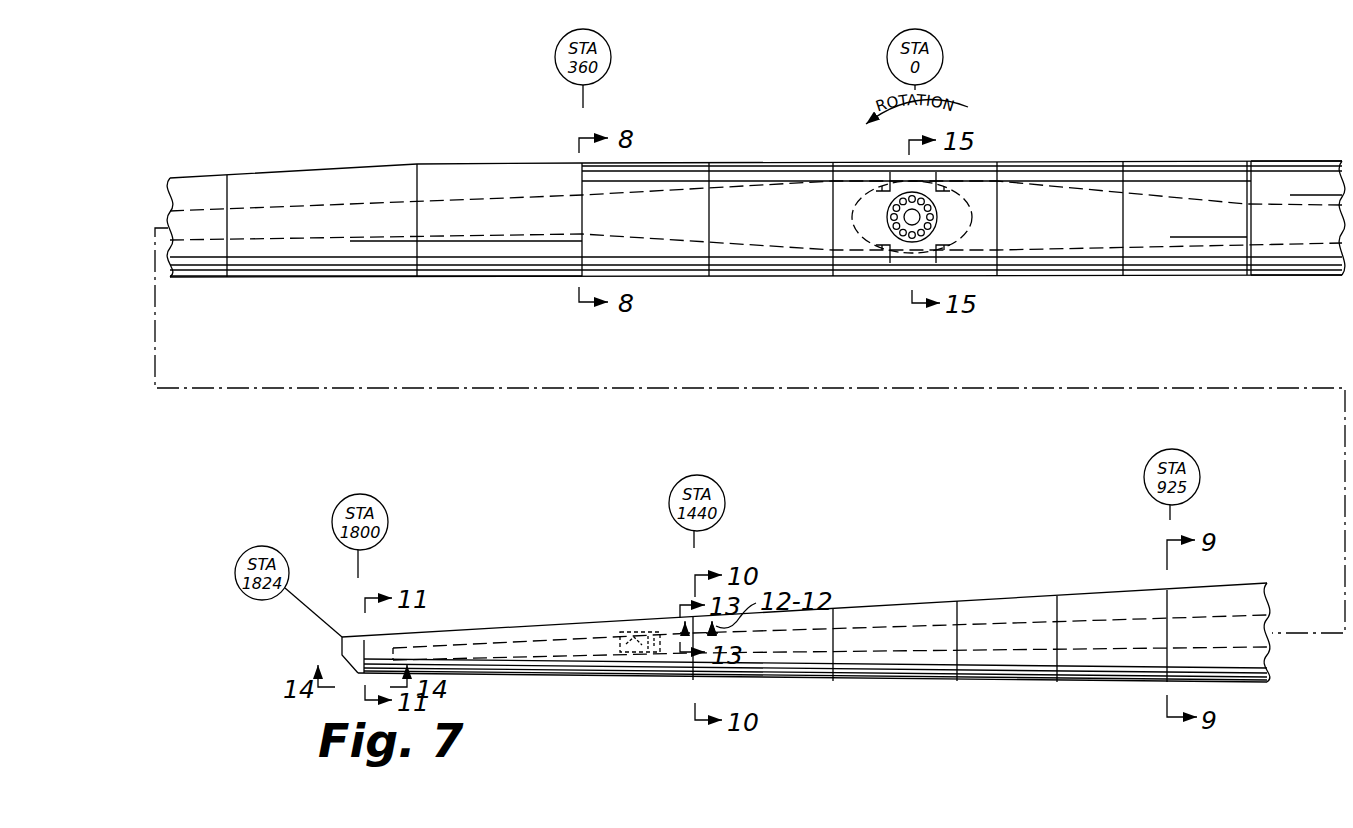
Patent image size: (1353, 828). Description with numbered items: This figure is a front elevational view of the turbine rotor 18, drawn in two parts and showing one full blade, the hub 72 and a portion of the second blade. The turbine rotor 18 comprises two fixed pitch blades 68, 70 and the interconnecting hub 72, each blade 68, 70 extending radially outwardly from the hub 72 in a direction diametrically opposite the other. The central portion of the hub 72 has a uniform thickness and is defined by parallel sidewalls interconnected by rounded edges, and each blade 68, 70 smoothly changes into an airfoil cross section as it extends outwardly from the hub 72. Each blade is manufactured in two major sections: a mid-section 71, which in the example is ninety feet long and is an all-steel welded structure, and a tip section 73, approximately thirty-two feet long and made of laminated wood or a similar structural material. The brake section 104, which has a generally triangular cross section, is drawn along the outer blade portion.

The turbine rotor 18 is at (1010, 146).
The fixed pitch blade 70 is at (1332, 152).
The mid-section 71 is at (333, 279).
The fixed pitch blade 68 is at (436, 281).
The hub 72 is at (858, 277).
The brake section 104 is at (503, 631).
The tip section 73 is at (548, 680).